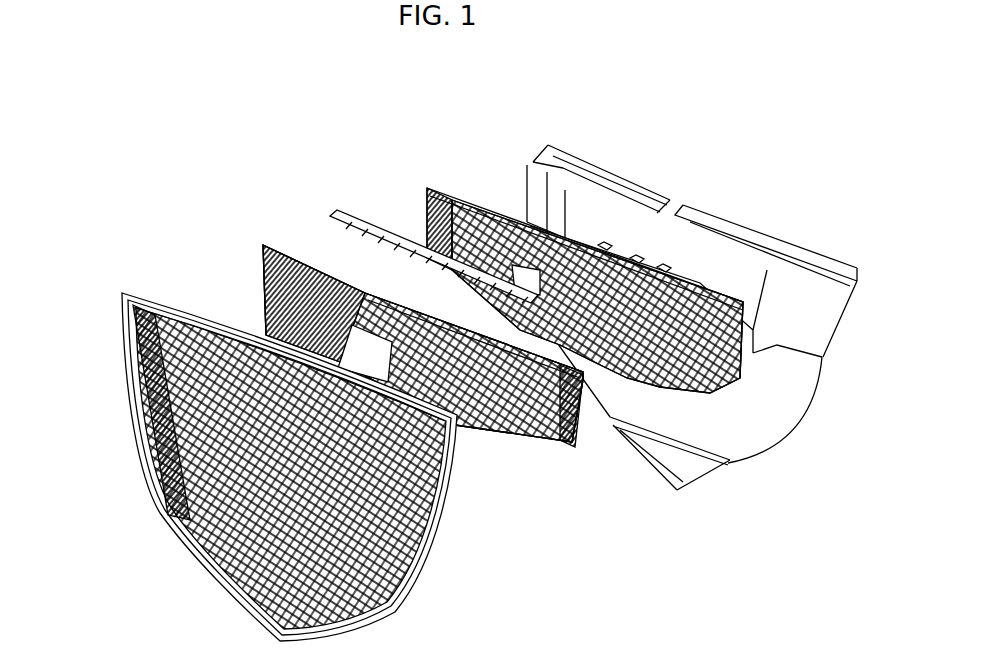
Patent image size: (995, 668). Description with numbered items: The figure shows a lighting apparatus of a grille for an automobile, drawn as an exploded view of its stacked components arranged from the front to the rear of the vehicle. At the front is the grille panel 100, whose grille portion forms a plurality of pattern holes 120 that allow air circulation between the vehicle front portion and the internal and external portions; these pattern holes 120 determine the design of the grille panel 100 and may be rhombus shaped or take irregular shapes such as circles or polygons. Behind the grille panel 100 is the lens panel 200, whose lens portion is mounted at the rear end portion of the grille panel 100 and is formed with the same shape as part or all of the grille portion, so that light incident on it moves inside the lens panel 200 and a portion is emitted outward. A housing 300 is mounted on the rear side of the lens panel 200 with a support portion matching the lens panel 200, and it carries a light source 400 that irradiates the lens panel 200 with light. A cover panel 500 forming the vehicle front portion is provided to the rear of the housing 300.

The grille panel 100 is at (176, 546).
The pattern holes 120 is at (147, 458).
The lens panel 200 is at (257, 256).
The housing 300 is at (424, 186).
The light source 400 is at (329, 213).
The cover panel 500 is at (724, 202).